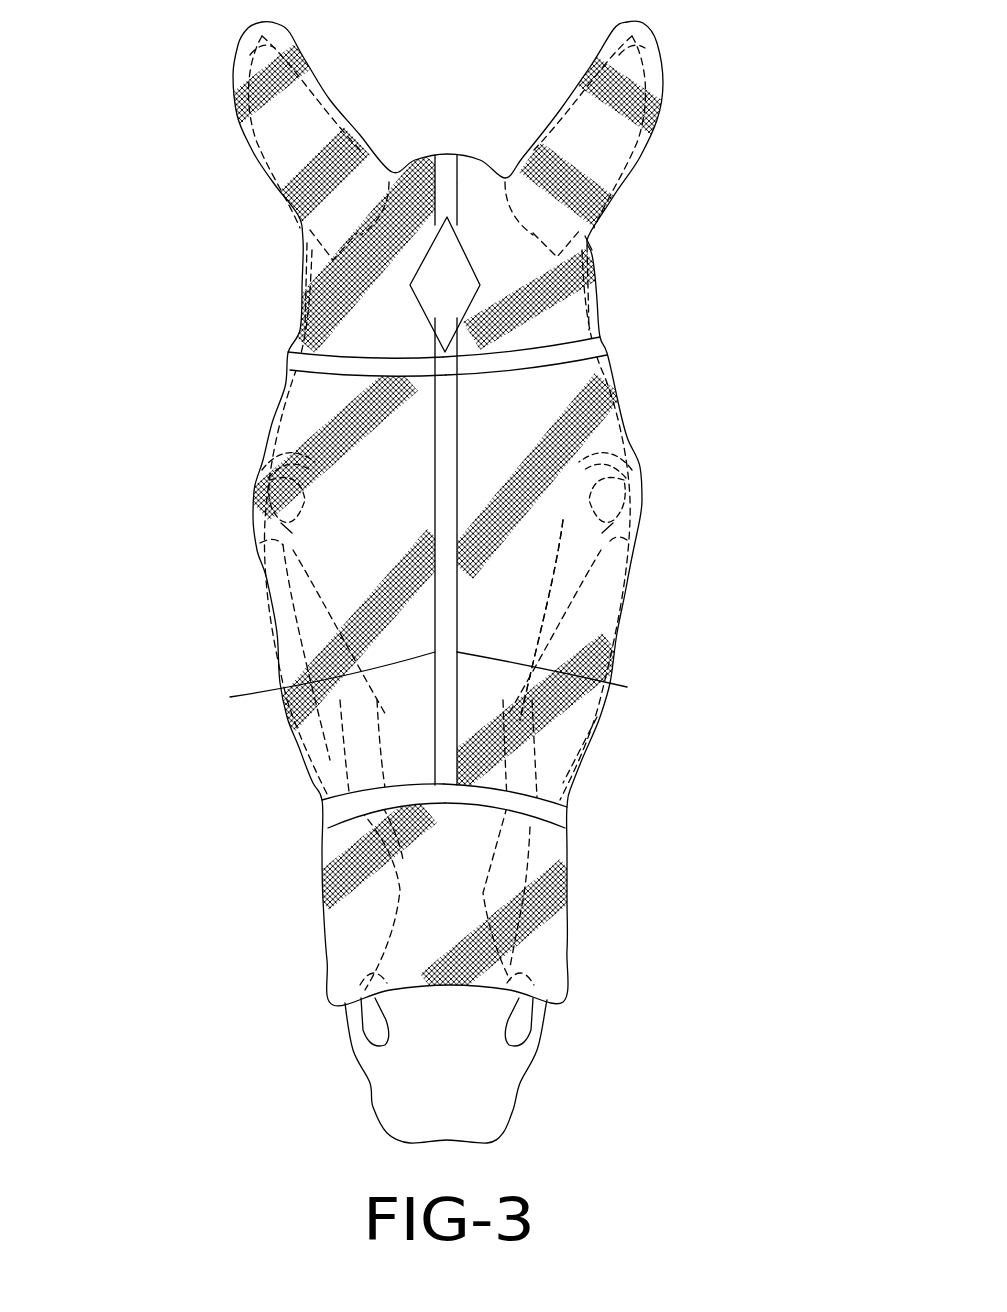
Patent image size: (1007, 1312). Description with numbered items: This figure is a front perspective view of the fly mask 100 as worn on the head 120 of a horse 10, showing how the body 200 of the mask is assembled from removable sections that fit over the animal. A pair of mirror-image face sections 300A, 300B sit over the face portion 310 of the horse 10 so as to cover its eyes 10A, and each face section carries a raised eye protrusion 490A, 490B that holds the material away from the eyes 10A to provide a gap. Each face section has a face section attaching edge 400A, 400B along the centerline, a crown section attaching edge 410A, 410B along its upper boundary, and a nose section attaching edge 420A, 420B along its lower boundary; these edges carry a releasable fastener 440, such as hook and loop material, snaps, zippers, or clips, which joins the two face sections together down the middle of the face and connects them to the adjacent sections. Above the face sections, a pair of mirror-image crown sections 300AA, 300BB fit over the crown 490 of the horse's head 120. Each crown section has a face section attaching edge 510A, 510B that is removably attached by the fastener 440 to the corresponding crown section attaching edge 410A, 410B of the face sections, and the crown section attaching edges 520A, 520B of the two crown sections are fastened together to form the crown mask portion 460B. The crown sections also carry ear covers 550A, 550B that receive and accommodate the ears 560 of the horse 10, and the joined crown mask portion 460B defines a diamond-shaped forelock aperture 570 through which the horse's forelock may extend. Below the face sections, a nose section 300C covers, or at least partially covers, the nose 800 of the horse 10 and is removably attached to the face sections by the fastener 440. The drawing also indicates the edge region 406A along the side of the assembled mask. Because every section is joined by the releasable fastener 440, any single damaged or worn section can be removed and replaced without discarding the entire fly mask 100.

The horse 10 is at (372, 1113).
The eyes 10A is at (260, 543).
The fly mask 100 is at (300, 635).
The head 120 is at (530, 565).
The body 200 is at (327, 713).
The face section 300A is at (353, 500).
The face section 300B is at (530, 500).
The nose section 300C is at (555, 967).
The crown section 300AA is at (387, 293).
The crown section 300BB is at (500, 290).
The face portion 310 is at (541, 620).
The face section attaching edge 400A is at (280, 692).
The face section attaching edge 400B is at (610, 688).
The side edge 406A is at (600, 740).
The crown section attaching edge 410A is at (327, 367).
The crown section attaching edge 410B is at (580, 362).
The nose section attaching edge 420A is at (350, 797).
The nose section attaching edge 420B is at (537, 820).
The releasable fastener 440 is at (447, 155).
The crown mask portion 460B is at (597, 243).
The crown 490 is at (497, 240).
The eye protrusion 490A is at (250, 493).
The eye protrusion 490B is at (640, 495).
The face section attaching edge 510A is at (300, 327).
The face section attaching edge 510B is at (565, 333).
The crown section attaching edge 520A is at (433, 170).
The crown section attaching edge 520B is at (458, 203).
The ear cover 550A is at (282, 145).
The ear cover 550B is at (613, 143).
The ears 560 is at (250, 63).
The forelock aperture 570 is at (443, 277).
The nose 800 is at (487, 1103).